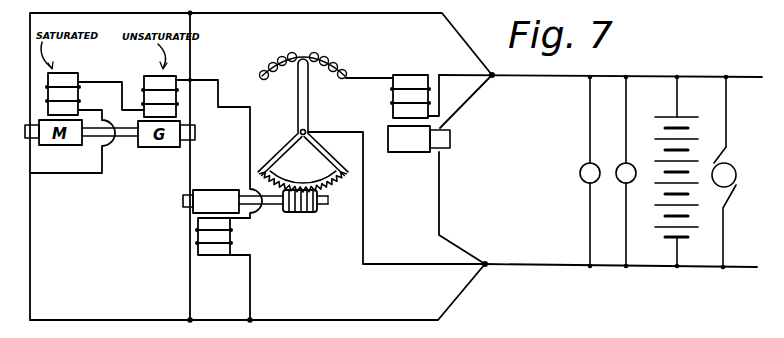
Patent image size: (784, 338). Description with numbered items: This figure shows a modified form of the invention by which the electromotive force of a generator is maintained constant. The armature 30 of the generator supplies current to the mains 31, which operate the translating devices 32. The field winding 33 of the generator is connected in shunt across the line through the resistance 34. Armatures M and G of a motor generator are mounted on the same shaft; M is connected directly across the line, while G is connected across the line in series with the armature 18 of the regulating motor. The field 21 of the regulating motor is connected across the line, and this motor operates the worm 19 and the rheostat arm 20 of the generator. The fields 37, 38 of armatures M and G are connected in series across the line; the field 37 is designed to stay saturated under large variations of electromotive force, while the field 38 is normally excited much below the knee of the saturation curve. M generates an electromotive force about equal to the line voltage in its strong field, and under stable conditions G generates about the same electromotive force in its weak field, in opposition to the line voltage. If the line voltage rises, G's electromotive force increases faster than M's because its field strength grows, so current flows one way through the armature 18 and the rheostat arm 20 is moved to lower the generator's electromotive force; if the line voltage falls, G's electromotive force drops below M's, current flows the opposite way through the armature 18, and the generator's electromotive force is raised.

The armature of the regulating motor 18 is at (211, 201).
The worm 19 is at (306, 213).
The rheostat arm 20 is at (303, 125).
The field of the regulating motor 21 is at (222, 237).
The armature of the generator 30 is at (419, 139).
The mains 31 is at (553, 78).
The translating devices 32 is at (620, 166).
The field winding 33 is at (404, 96).
The resistance 34 is at (325, 63).
The field of armature M 37 is at (62, 79).
The field of armature G 38 is at (152, 77).